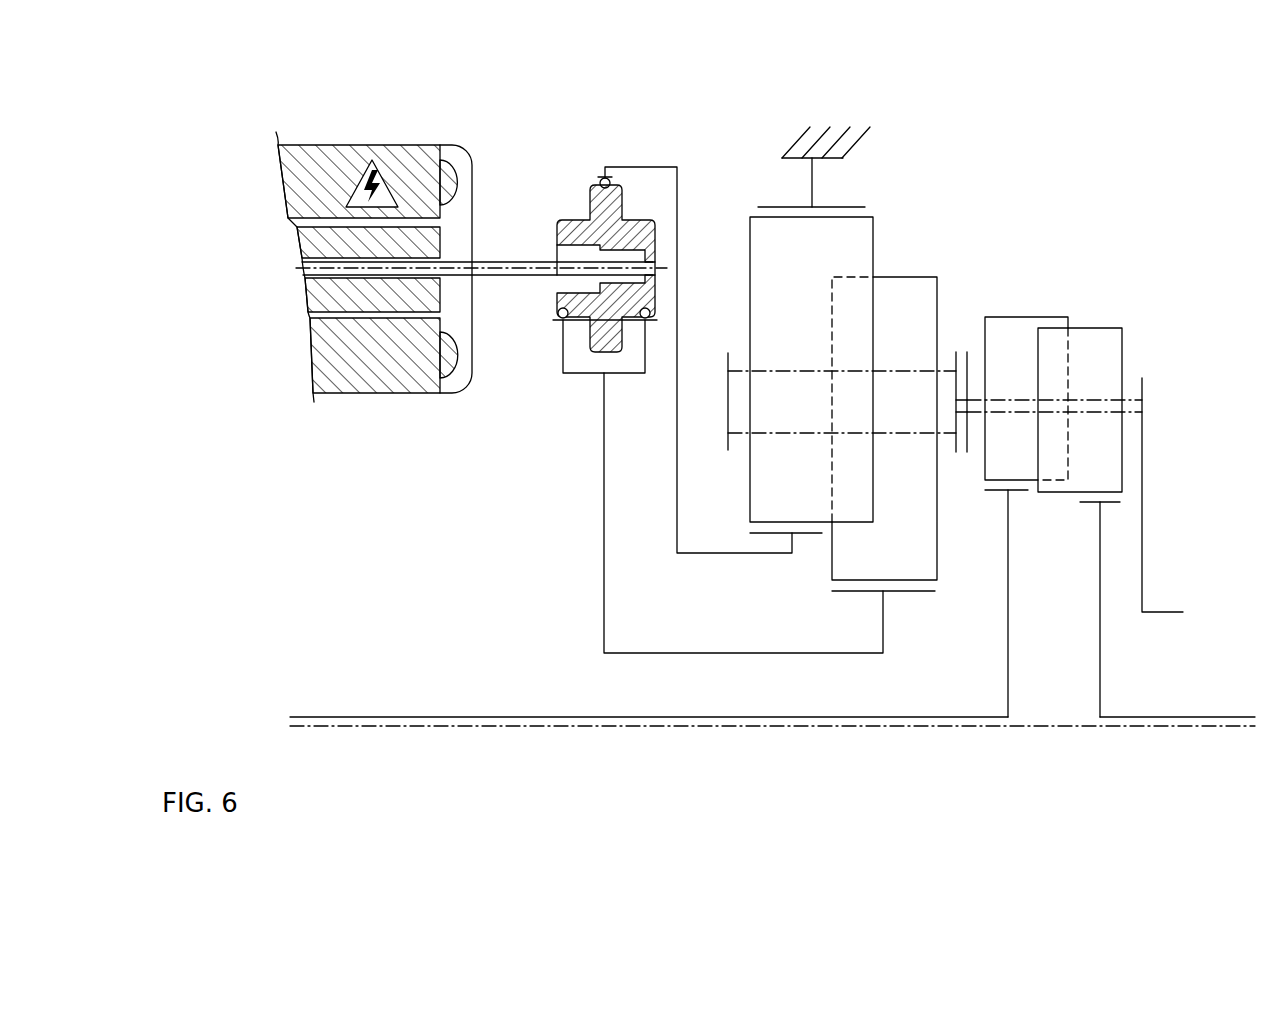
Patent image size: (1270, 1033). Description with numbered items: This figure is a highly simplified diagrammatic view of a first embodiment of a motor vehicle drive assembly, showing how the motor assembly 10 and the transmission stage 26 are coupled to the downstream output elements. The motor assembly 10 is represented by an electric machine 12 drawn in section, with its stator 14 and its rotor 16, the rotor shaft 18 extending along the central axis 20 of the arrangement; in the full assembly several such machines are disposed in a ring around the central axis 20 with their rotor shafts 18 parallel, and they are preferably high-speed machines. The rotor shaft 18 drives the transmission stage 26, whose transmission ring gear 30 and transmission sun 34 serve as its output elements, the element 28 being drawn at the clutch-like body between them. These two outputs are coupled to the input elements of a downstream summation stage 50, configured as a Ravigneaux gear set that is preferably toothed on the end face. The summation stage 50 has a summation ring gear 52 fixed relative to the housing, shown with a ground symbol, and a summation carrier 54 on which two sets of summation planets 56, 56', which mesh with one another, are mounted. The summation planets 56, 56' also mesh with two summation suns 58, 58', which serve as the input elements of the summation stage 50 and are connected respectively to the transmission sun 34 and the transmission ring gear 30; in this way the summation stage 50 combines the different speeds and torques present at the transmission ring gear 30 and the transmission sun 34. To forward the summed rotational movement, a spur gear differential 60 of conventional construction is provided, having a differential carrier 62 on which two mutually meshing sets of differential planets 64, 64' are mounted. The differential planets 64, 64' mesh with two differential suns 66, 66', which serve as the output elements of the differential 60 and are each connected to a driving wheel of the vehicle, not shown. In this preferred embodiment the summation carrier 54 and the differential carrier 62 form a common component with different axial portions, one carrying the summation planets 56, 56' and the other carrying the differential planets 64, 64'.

The motor assembly 10 is at (336, 478).
The electric machine 12 is at (250, 140).
The stator 14 is at (385, 378).
The rotor 16 is at (335, 300).
The rotor shaft 18 is at (505, 262).
The central axis 20 is at (592, 722).
The transmission stage 26 is at (565, 478).
The coupling body 28 is at (580, 228).
The transmission ring gear 30 is at (600, 176).
The transmission sun 34 is at (605, 378).
The summation stage 50 is at (816, 675).
The summation ring gear 52 is at (853, 207).
The summation carrier 54 is at (728, 353).
The summation planets 56 is at (915, 385).
The summation planets 56' is at (847, 356).
The summation sun 58 is at (891, 625).
The summation sun 58' is at (786, 572).
The spur gear differential 60 is at (1053, 673).
The differential carrier 62 is at (1142, 400).
The differential planets 64 is at (1026, 365).
The differential planets 64' is at (1084, 371).
The differential sun 66 is at (1019, 603).
The differential sun 66' is at (1090, 609).